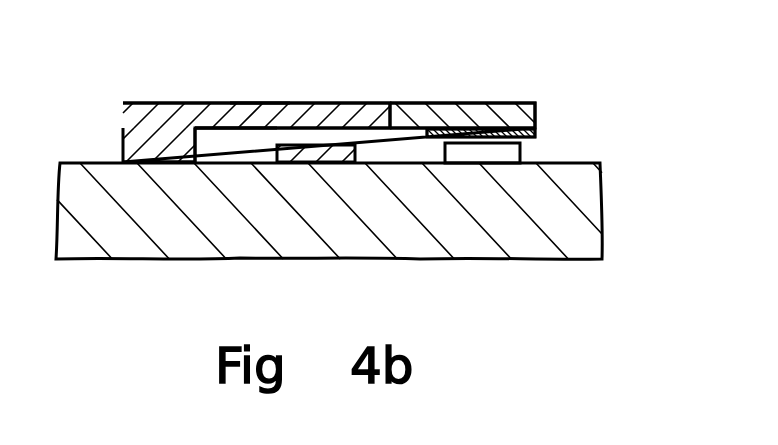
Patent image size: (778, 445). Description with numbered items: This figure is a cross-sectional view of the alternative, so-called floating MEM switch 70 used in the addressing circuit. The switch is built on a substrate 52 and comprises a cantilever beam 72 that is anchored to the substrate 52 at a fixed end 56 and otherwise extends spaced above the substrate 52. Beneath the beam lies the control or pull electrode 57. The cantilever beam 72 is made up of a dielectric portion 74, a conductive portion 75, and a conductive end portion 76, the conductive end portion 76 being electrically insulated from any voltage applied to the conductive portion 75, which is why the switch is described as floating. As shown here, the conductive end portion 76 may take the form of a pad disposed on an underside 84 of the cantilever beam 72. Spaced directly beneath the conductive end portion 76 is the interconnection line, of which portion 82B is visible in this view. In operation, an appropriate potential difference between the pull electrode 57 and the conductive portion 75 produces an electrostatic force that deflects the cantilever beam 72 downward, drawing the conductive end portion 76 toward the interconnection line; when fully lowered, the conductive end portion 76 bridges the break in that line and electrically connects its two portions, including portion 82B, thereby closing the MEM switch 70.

The substrate 52 is at (577, 226).
The fixed end 56 is at (130, 132).
The pull electrode 57 is at (275, 150).
The MEM switch 70 is at (465, 86).
The cantilever beam 72 is at (277, 110).
The dielectric portion 74 is at (403, 128).
The conductive portion 75 is at (258, 114).
The conductive end portion 76 is at (537, 132).
The portion of interconnection line 82B is at (517, 152).
The underside 84 is at (362, 128).